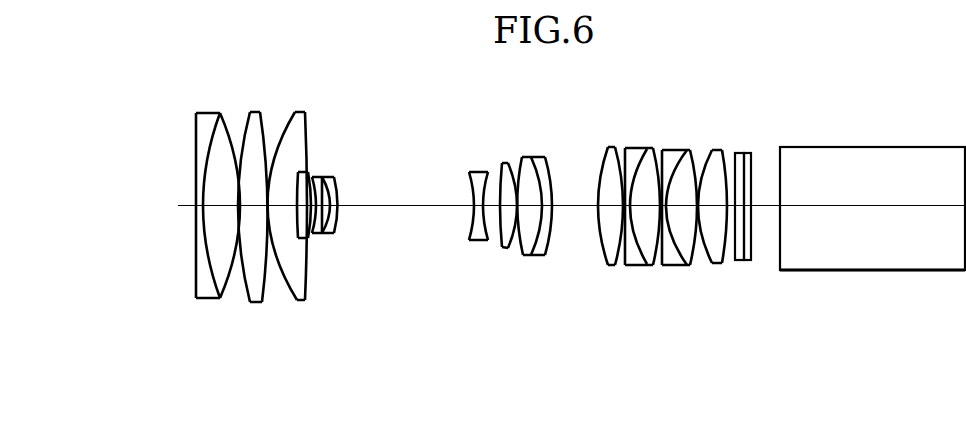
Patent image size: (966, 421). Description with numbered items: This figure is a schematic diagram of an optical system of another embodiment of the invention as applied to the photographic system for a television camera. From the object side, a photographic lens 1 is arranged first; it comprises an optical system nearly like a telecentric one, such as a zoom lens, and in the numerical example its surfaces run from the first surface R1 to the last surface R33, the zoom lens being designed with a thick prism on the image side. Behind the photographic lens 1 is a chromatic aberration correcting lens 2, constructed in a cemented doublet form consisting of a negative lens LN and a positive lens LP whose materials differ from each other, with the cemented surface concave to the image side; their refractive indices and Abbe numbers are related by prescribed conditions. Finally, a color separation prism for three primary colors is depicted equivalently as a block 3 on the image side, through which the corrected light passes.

The photographic lens 1 is at (723, 338).
The chromatic aberration correcting lens 2 is at (762, 338).
The color separation prism 3 is at (772, 338).
The first lens surface R1 is at (196, 126).
The last zoom lens surface R33 is at (723, 151).
The negative lens LN is at (738, 153).
The positive lens LP is at (748, 153).